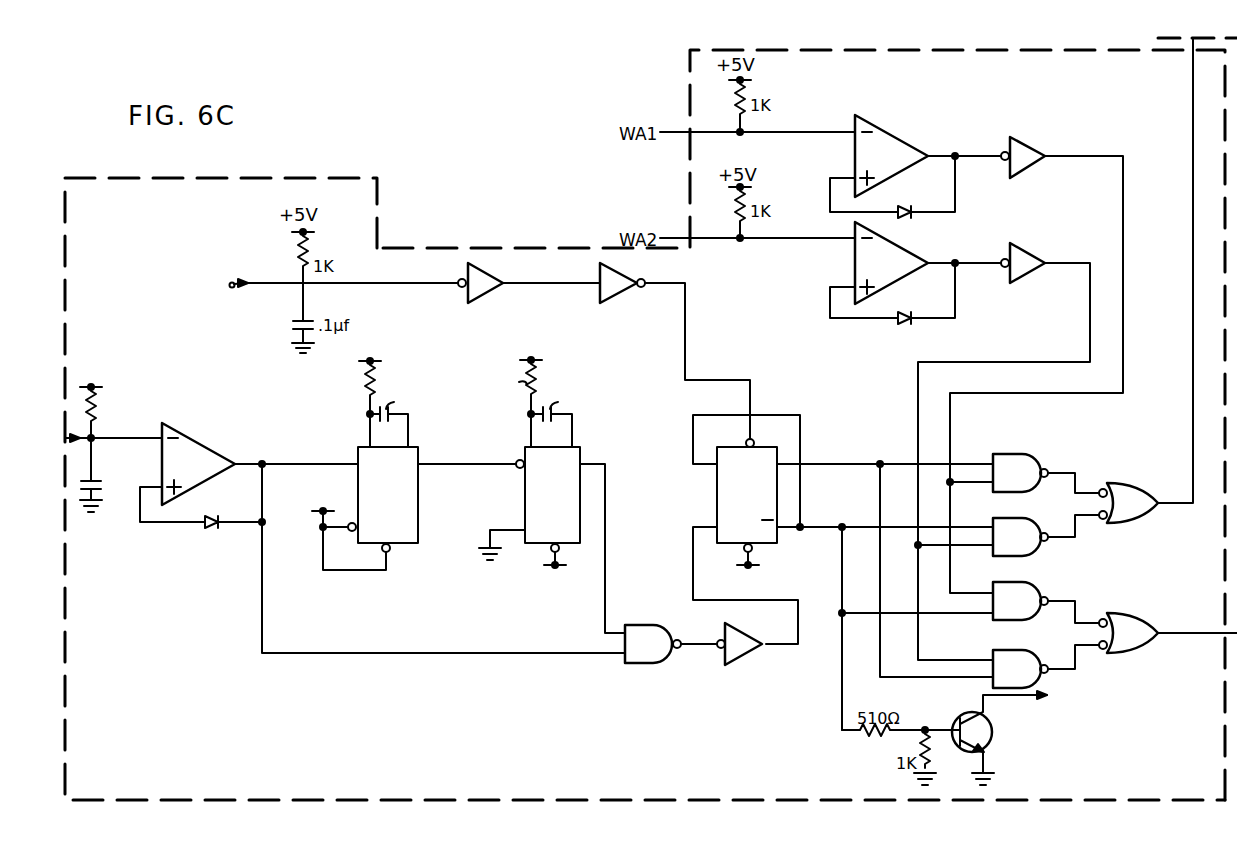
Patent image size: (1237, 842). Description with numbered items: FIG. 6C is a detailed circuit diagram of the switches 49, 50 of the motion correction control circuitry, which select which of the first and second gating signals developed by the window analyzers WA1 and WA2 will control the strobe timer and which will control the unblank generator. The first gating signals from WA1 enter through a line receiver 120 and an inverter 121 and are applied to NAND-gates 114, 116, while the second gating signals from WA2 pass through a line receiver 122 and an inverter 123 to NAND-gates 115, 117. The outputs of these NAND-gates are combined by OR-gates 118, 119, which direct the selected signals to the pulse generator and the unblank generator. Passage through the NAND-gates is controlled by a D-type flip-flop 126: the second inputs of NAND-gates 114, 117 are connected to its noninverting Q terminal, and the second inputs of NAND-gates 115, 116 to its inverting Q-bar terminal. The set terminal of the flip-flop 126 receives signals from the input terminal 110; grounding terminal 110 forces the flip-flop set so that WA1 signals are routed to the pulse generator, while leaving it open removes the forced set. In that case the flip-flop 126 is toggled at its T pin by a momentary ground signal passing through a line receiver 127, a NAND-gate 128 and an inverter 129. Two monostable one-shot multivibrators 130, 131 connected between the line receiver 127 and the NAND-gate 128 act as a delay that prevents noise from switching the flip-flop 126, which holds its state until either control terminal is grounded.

The switch 49 is at (410, 753).
The switch 50 is at (807, 419).
The input terminal 110 is at (230, 285).
The NAND-gate 114 is at (1025, 456).
The NAND-gate 115 is at (1025, 520).
The NAND-gate 116 is at (1025, 586).
The NAND-gate 117 is at (1023, 654).
The OR-gate 118 is at (1128, 491).
The OR-gate 119 is at (1133, 620).
The 8820 line receiver 120 is at (892, 142).
The inverter 121 is at (1030, 146).
The 8820 line receiver 122 is at (898, 273).
The inverter 123 is at (1027, 271).
The 7474 D-type flip-flop 126 is at (717, 497).
The 8820 line receiver 127 is at (202, 449).
The NAND-gate 128 is at (636, 660).
The inverter 129 is at (734, 660).
The 9602 monostable one-shot multivibrator 130 is at (407, 533).
The 9602 monostable one-shot multivibrator 131 is at (580, 455).